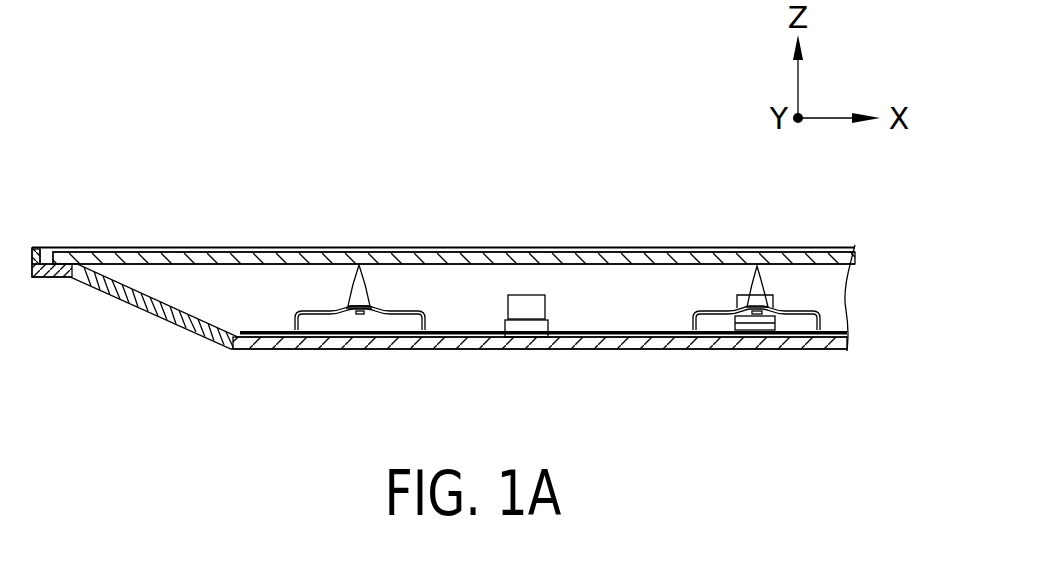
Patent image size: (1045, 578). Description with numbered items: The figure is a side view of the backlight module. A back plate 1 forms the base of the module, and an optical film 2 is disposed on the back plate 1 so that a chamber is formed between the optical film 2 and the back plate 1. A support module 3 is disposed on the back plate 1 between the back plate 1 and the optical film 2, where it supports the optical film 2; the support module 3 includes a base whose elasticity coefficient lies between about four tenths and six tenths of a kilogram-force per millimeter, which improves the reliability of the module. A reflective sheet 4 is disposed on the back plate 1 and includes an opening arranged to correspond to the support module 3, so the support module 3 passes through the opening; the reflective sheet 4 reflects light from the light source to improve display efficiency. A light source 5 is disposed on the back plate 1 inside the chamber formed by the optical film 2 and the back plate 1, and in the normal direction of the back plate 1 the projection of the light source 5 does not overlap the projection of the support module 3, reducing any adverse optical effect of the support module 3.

The back plate 1 is at (173, 316).
The optical film 2 is at (856, 257).
The support module 3 is at (821, 318).
The reflective sheet 4 is at (259, 330).
The light source 5 is at (528, 325).